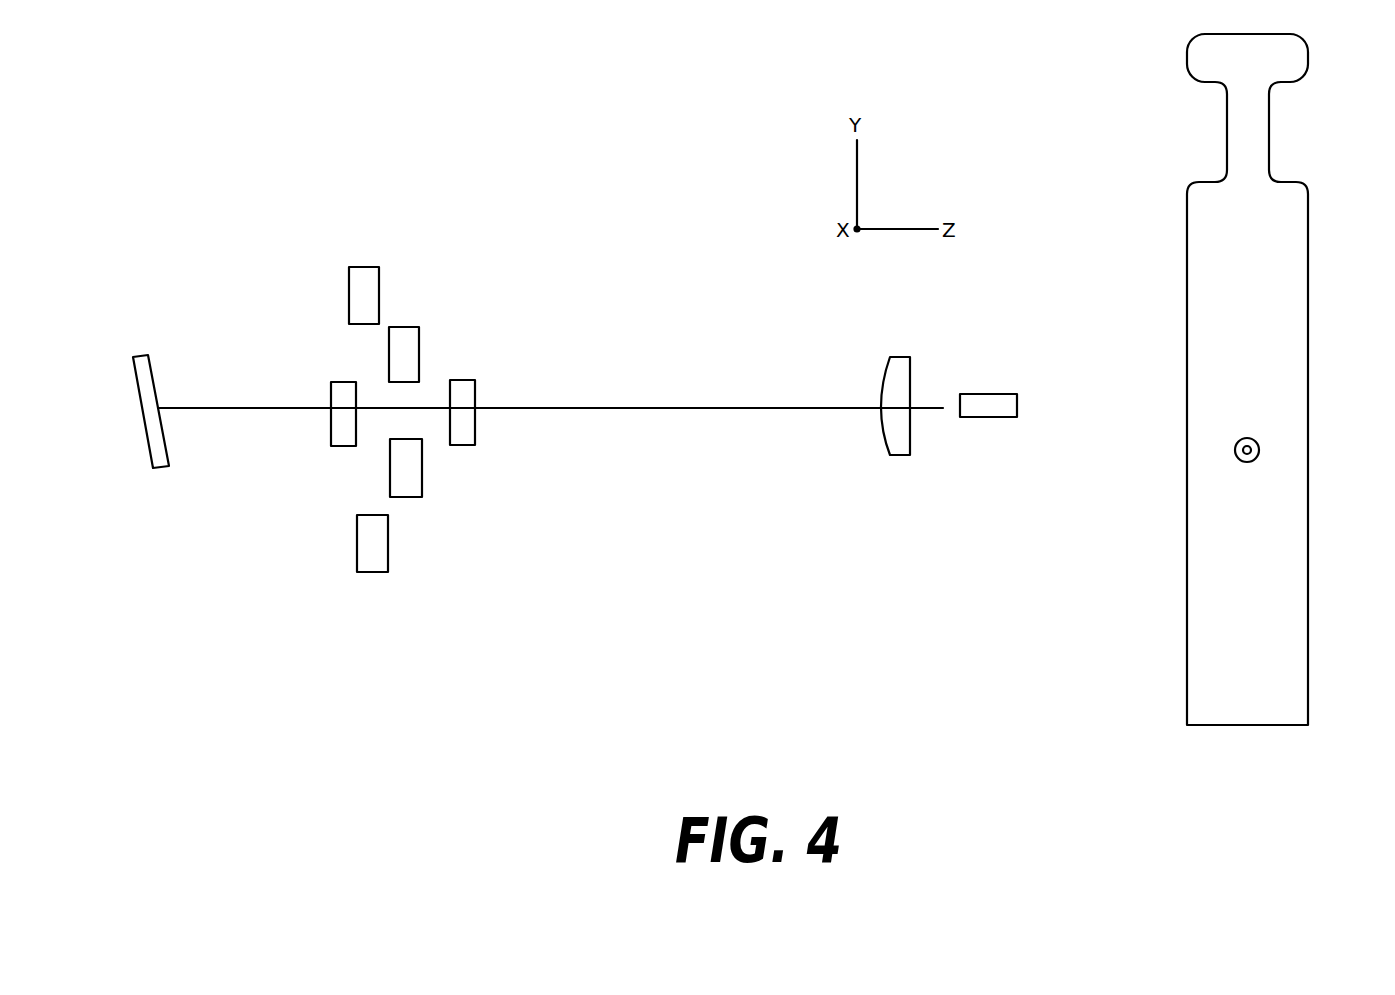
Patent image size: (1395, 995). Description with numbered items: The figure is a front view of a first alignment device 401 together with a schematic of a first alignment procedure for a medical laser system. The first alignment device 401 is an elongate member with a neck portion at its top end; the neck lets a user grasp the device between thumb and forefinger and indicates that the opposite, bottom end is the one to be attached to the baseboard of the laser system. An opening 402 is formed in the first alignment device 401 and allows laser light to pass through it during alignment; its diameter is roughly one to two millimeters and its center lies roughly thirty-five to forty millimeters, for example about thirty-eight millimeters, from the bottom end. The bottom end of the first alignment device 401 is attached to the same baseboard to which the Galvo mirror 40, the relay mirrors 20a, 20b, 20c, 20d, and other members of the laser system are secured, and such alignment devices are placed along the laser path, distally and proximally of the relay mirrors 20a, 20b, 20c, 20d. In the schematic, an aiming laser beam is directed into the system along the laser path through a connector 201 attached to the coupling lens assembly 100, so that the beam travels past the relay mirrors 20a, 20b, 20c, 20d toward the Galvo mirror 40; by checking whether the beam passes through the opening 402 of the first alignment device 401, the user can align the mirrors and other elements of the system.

The relay mirror 20a is at (361, 279).
The relay mirror 20b is at (408, 332).
The relay mirror 20c is at (408, 478).
The relay mirror 20d is at (375, 552).
The Galvo mirror 40 is at (170, 460).
The coupling lens assembly 100 is at (908, 457).
The connector 201 is at (1005, 394).
The first alignment device 401 is at (358, 397).
The opening 402 is at (1252, 442).